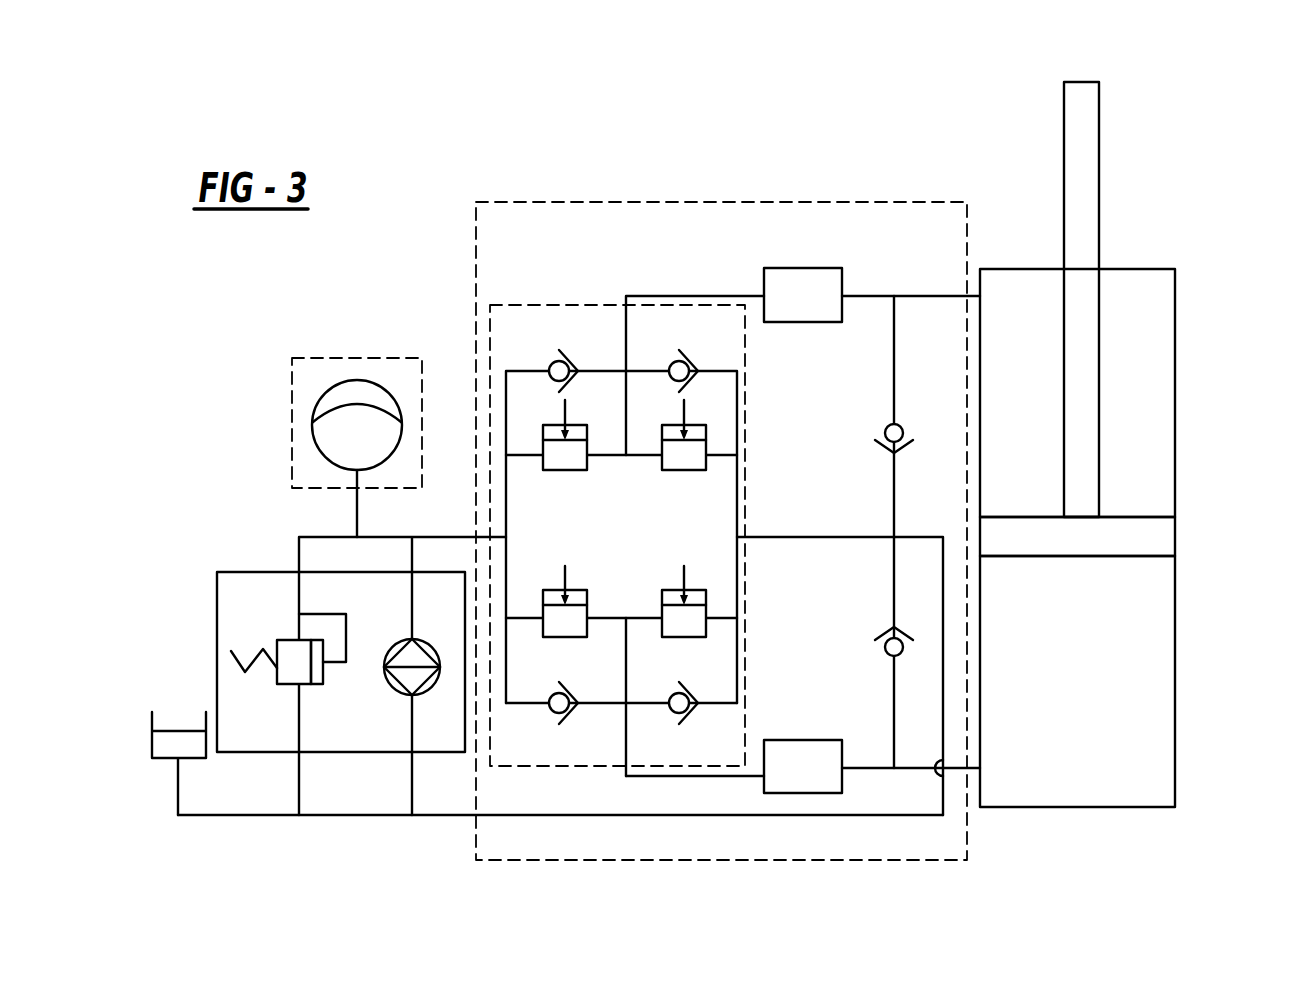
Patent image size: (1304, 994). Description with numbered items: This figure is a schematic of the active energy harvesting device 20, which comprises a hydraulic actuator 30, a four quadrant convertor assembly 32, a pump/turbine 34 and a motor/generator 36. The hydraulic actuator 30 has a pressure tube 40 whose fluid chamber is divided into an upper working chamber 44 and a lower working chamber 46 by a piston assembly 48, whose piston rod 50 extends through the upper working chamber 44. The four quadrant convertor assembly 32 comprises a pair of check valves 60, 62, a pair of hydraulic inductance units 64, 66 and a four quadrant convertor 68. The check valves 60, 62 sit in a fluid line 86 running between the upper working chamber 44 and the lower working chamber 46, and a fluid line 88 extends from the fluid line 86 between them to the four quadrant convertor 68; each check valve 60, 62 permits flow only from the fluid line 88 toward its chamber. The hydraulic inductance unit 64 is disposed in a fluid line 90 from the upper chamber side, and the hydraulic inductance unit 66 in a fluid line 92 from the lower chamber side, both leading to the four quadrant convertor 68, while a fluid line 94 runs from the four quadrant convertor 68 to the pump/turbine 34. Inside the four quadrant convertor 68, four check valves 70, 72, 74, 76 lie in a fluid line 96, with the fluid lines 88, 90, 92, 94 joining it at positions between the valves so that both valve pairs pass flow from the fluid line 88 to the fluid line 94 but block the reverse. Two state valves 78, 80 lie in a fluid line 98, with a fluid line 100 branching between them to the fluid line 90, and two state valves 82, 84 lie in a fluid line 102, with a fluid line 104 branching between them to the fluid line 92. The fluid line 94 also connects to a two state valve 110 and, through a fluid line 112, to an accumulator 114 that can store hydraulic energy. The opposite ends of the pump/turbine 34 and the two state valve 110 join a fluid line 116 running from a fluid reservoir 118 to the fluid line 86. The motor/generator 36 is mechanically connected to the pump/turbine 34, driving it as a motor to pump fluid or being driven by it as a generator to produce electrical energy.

The active energy harvesting device 20 is at (788, 128).
The hydraulic actuator 30 is at (1263, 131).
The four quadrant convertor assembly 32 is at (827, 202).
The pump/turbine 34 is at (388, 645).
The motor/generator 36 is at (395, 685).
The pressure tube 40 is at (1175, 647).
The upper working chamber 44 is at (1122, 412).
The lower working chamber 46 is at (1076, 689).
The piston assembly 48 is at (1160, 541).
The piston rod 50 is at (1078, 183).
The check valve 60 is at (900, 454).
The check valve 62 is at (897, 635).
The hydraulic inductance unit 64 is at (872, 295).
The hydraulic inductance unit 66 is at (872, 766).
The four quadrant convertor 68 is at (583, 305).
The check valve 70 is at (555, 360).
The check valve 72 is at (690, 360).
The check valve 74 is at (553, 710).
The check valve 76 is at (690, 710).
The two state valve 78 is at (572, 470).
The two state valve 80 is at (681, 470).
The two state valve 82 is at (562, 637).
The two state valve 84 is at (707, 600).
The fluid line 86 is at (894, 385).
The fluid line 88 is at (798, 537).
The fluid line 90 is at (663, 296).
The fluid line 92 is at (647, 777).
The fluid line 94 is at (443, 537).
The fluid line 96 is at (595, 703).
The fluid line 98 is at (638, 457).
The fluid line 100 is at (624, 425).
The fluid line 102 is at (608, 617).
The fluid line 104 is at (626, 675).
The two state valve 110 is at (288, 686).
The fluid line 112 is at (355, 517).
The accumulator 114 is at (313, 447).
The fluid line 116 is at (360, 815).
The fluid reservoir 118 is at (165, 750).